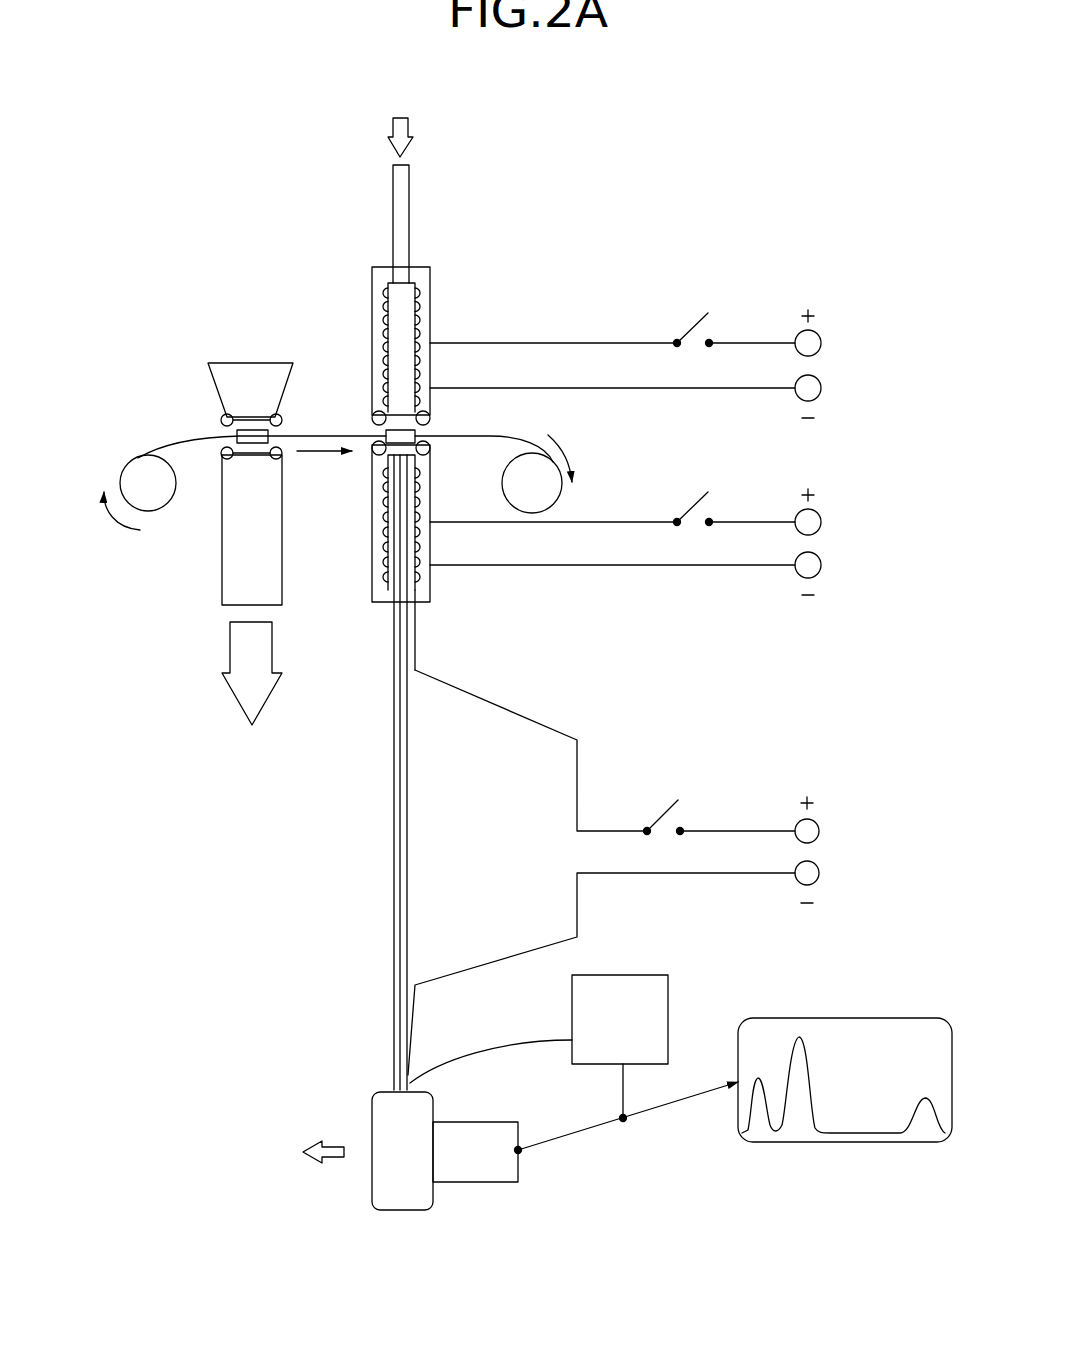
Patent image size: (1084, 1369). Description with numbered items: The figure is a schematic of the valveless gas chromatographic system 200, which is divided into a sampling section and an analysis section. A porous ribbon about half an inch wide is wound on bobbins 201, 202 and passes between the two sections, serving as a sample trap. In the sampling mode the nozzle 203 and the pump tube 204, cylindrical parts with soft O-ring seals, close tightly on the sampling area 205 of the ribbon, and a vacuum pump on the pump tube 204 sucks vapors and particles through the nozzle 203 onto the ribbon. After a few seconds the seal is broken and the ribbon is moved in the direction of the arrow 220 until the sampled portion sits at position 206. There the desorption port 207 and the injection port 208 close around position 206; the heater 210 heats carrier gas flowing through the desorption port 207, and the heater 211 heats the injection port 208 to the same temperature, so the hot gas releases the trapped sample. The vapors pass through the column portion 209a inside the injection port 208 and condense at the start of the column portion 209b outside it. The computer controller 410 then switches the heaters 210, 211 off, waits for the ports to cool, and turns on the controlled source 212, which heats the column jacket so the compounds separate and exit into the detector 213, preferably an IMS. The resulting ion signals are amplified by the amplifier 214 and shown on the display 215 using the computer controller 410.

The valveless gas chromatographic system 200 is at (192, 148).
The bobbin 201 is at (178, 512).
The bobbin 202 is at (568, 494).
The nozzle 203 is at (213, 362).
The pump tube 204 is at (208, 580).
The sampling area of the ribbon 205 is at (225, 436).
The position on the ribbon 206 is at (375, 430).
The desorption port 207 is at (432, 262).
The injection port 208 is at (311, 578).
The column portion inside the injection port 209a is at (388, 538).
The column portion outside the injection port 209b is at (378, 879).
The electric heater 210 is at (652, 364).
The electric heater 211 is at (650, 542).
The controlled source 212 is at (640, 872).
The detector 213 is at (405, 1214).
The amplifier 214 is at (477, 1185).
The display 215 is at (872, 1138).
The arrow 220 is at (318, 462).
The computer controller 410 is at (668, 1006).